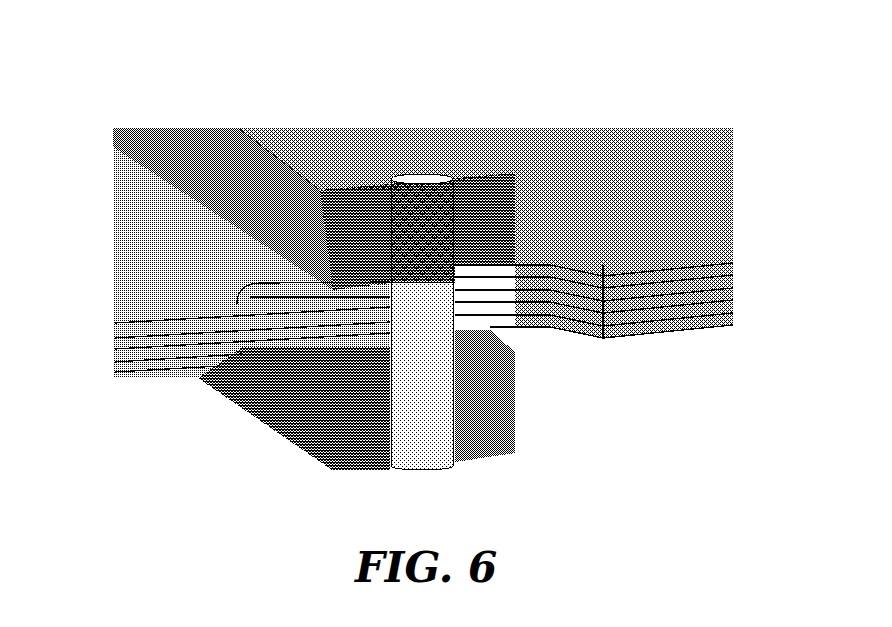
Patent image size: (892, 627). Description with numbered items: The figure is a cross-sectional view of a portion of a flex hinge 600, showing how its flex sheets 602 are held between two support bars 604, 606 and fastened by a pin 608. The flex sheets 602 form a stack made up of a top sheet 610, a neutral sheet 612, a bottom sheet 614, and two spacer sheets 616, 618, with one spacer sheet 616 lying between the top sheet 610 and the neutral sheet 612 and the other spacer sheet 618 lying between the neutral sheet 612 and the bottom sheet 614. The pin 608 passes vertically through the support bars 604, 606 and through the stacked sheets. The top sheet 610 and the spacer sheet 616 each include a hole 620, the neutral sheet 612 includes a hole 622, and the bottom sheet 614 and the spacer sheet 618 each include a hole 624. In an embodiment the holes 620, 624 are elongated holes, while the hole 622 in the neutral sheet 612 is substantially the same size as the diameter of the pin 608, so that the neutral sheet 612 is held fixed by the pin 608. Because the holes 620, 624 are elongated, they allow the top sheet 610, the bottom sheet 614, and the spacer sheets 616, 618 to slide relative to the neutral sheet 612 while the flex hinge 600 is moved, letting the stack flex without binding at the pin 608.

The flex hinge 600 is at (430, 253).
The flex sheets 602 is at (633, 230).
The support bar 604 is at (233, 146).
The support bar 606 is at (483, 420).
The pin 608 is at (422, 197).
The top sheet 610 is at (126, 323).
The neutral sheet 612 is at (121, 349).
The bottom sheet 614 is at (147, 372).
The spacer sheet 616 is at (125, 339).
The spacer sheet 618 is at (120, 364).
The hole 620 is at (538, 256).
The hole 622 is at (387, 313).
The hole 624 is at (546, 338).